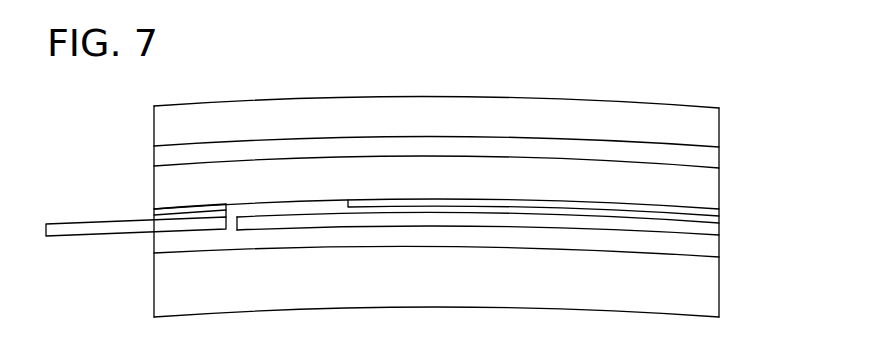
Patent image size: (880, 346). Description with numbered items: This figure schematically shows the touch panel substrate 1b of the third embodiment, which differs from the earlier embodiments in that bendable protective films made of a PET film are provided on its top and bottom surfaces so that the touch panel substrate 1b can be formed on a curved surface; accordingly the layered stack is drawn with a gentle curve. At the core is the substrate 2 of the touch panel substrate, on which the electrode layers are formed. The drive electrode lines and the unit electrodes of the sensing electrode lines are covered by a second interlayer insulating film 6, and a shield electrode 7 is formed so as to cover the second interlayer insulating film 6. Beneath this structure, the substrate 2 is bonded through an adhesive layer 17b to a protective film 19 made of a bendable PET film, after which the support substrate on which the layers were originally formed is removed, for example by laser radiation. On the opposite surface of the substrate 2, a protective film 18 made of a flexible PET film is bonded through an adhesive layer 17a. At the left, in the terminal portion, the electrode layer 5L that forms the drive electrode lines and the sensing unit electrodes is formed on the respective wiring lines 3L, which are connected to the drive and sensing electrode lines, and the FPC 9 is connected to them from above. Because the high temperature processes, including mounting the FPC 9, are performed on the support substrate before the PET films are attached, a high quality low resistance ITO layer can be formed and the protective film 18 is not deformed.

The touch panel substrate 1b is at (712, 69).
The protective film 18 is at (713, 128).
The adhesive layer 17a is at (713, 158).
The substrate 2 is at (713, 197).
The second interlayer insulating film 6 is at (719, 219).
The shield electrode 7 is at (719, 228).
The adhesive layer 17b is at (713, 248).
The protective film 19 is at (713, 293).
The FPC 9 is at (55, 224).
The electrode layer 5L is at (153, 218).
The wiring line 3L is at (218, 204).